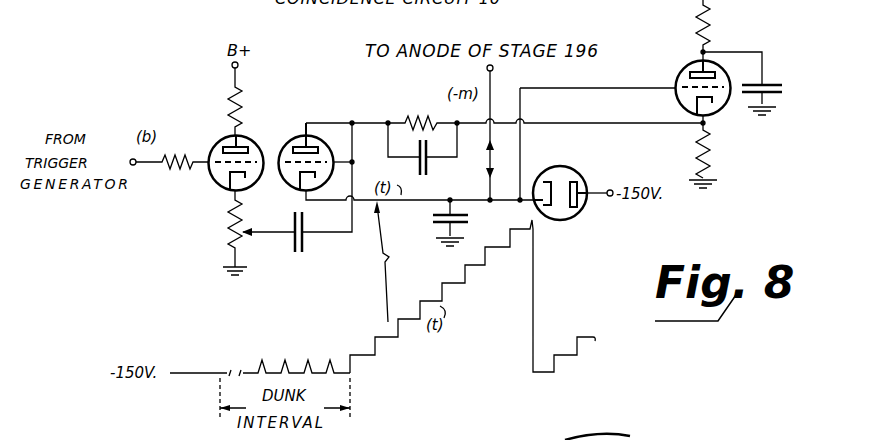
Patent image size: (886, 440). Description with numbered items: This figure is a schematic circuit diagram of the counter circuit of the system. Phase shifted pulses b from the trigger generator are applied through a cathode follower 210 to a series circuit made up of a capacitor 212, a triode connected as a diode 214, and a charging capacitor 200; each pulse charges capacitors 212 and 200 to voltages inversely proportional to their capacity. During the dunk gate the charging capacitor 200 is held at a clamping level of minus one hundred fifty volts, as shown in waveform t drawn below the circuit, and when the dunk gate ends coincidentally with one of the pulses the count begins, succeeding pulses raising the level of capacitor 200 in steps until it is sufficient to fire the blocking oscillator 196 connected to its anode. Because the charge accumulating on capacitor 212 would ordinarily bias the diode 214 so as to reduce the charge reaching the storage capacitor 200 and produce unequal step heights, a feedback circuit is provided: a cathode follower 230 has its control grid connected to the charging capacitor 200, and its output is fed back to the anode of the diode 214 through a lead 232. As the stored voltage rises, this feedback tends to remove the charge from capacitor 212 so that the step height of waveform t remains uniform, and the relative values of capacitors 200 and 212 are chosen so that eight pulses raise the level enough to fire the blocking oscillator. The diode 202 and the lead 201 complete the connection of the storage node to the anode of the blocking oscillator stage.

The blocking oscillator 196 is at (490, 68).
The charging capacitor 200 is at (433, 217).
The lead from anode of stage 196 201 is at (487, 163).
The diode tube 202 is at (582, 158).
The cathode follower 210 is at (248, 137).
The capacitor 212 is at (294, 237).
The triode connected as a diode 214 is at (293, 198).
The cathode follower 230 is at (679, 75).
The lead 232 is at (630, 122).